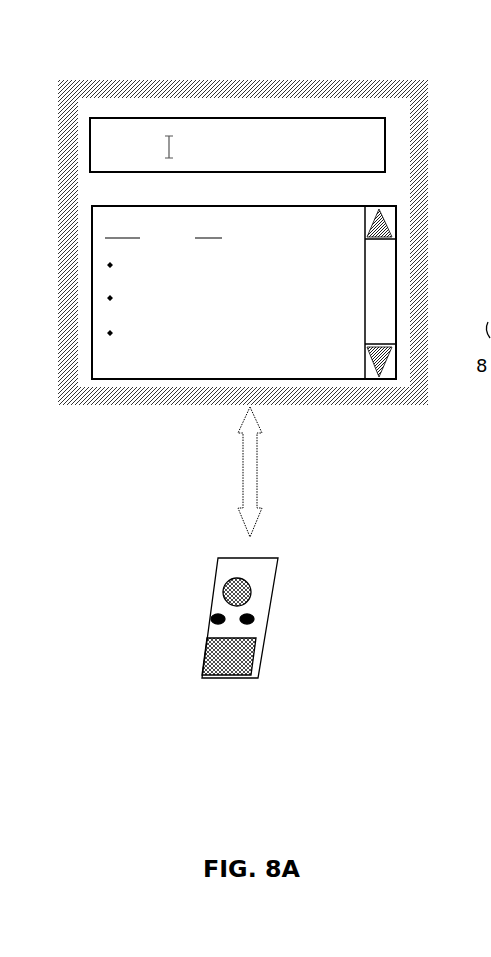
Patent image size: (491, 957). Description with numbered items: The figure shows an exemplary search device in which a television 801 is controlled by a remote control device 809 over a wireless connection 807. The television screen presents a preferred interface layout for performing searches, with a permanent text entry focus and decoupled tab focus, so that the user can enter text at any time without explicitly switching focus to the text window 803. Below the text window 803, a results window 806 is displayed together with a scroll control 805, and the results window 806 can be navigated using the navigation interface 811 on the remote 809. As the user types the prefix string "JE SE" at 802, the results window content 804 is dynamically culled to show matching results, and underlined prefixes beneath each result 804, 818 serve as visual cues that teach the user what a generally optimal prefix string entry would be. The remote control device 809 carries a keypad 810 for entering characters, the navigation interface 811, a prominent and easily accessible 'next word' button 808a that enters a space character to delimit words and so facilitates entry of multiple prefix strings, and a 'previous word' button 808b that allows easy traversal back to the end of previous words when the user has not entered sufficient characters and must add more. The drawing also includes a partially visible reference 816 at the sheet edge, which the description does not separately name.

The television 801 is at (88, 92).
The text entry 802 is at (172, 143).
The text window 803 is at (305, 127).
The results window content 804 is at (290, 230).
The scroll control 805 is at (388, 277).
The results window 806 is at (320, 374).
The wireless connection 807 is at (255, 477).
The 'next word' button 808a is at (252, 621).
The 'previous word' button 808b is at (216, 622).
The remote control device 809 is at (258, 678).
The keypad 810 is at (203, 677).
The navigation interface 811 is at (228, 582).
The reference (clipped) 816 is at (490, 438).
The result 818 is at (488, 276).